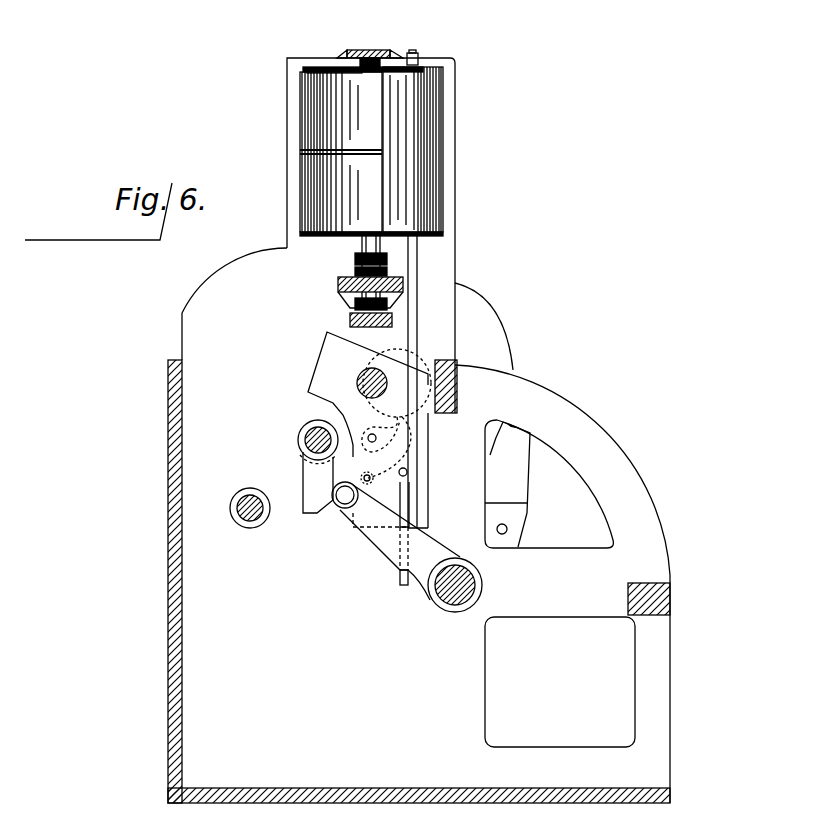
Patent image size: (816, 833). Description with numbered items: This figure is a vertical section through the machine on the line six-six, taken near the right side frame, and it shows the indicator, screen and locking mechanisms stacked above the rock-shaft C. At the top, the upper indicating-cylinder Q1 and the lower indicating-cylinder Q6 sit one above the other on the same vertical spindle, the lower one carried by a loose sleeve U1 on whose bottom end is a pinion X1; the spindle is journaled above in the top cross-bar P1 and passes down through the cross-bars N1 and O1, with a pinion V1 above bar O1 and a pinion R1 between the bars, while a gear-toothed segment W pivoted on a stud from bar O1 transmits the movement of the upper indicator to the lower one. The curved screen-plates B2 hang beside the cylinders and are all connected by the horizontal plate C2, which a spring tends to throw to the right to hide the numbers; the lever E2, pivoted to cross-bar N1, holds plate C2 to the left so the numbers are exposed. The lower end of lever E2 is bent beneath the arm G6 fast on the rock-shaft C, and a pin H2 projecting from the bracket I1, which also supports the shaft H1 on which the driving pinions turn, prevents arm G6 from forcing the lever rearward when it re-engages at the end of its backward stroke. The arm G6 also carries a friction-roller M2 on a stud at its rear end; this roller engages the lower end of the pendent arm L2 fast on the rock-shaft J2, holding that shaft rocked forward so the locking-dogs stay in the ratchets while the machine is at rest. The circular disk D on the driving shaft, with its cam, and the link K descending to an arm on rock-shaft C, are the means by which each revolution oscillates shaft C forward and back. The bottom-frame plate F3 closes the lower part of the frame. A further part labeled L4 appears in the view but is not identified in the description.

The friction-roller M2 is at (345, 68).
The top cross-bar P1 is at (378, 36).
The horizontal plate C2 is at (377, 217).
The indicating-cylinder Q1 is at (341, 152).
The indicating-cylinder Q6 is at (360, 192).
The screen-plate B2 is at (413, 115).
The pinion X1 is at (388, 259).
The sleeve U1 is at (362, 259).
The pinion V1 is at (390, 268).
The cross-bar O1 is at (338, 283).
The lever E2 is at (413, 300).
The pinion R1 is at (355, 305).
The cross-bar N1 is at (350, 317).
The bracket I1 is at (338, 347).
The shaft H1 is at (360, 380).
The gear-toothed segment W is at (459, 407).
The circular disk D is at (494, 336).
The link K is at (523, 478).
The pin H2 is at (406, 473).
The rock-shaft J2 is at (310, 437).
The pendent arm L2 is at (317, 473).
The pivot L4 is at (250, 518).
The arm G6 is at (377, 543).
The rock-shaft C is at (440, 600).
The bottom-frame plate F3 is at (334, 796).